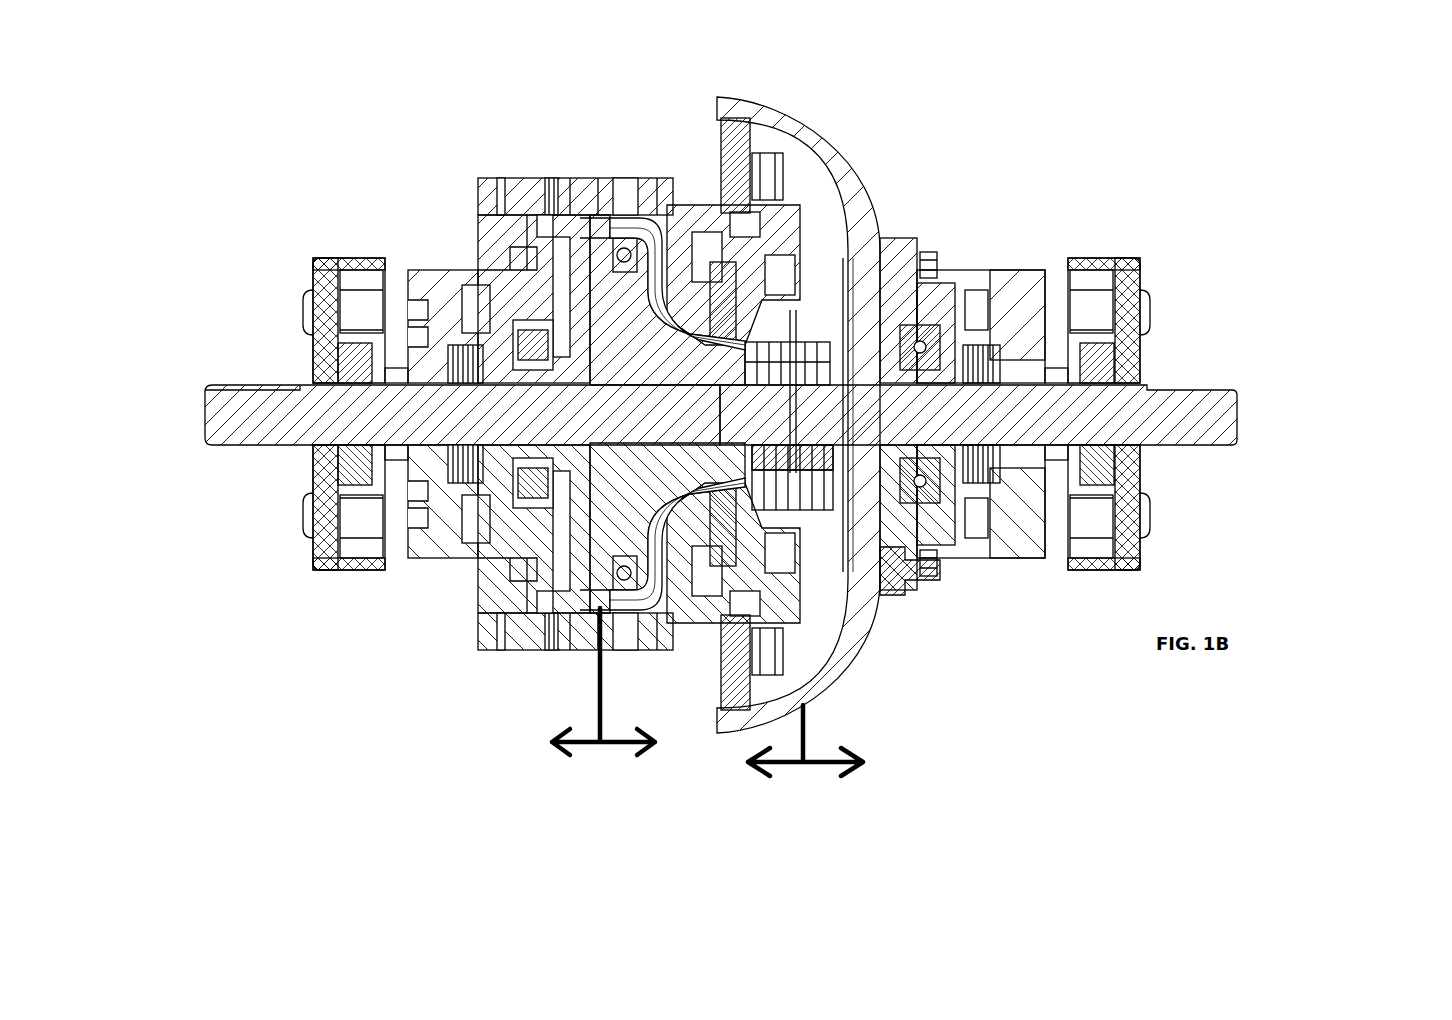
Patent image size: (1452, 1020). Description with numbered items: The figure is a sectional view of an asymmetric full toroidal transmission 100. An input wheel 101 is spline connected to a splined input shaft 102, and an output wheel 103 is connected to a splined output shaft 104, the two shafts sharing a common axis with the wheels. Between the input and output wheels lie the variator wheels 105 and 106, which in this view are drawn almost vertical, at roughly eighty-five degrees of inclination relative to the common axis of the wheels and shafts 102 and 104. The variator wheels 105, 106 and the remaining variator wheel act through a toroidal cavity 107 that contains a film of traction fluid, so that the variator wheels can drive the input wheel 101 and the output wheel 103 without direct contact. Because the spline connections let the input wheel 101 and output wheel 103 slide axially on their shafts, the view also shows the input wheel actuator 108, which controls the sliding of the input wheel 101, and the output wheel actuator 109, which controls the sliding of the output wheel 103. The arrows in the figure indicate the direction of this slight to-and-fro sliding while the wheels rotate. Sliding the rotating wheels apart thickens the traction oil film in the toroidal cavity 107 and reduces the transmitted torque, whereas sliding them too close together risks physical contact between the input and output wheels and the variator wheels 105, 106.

The asymmetric full toroidal transmission 100 is at (785, 436).
The input wheel 101 is at (608, 542).
The splined input shaft 102 is at (247, 440).
The output wheel 103 is at (870, 212).
The splined output shaft 104 is at (1237, 446).
The variator wheel 105 is at (738, 140).
The variator wheel 106 is at (740, 687).
The toroidal cavity 107 is at (810, 172).
The input wheel actuator 108 is at (440, 496).
The output wheel actuator 109 is at (935, 292).